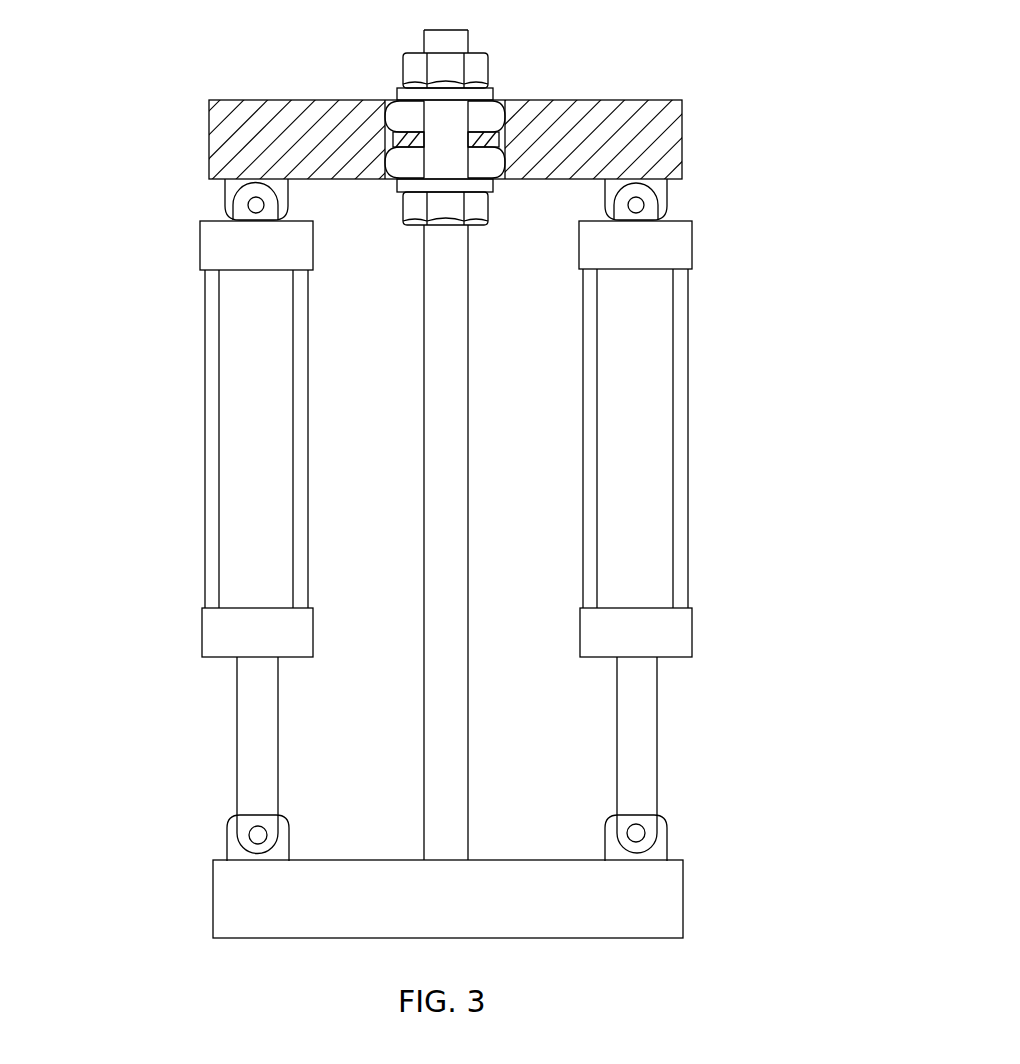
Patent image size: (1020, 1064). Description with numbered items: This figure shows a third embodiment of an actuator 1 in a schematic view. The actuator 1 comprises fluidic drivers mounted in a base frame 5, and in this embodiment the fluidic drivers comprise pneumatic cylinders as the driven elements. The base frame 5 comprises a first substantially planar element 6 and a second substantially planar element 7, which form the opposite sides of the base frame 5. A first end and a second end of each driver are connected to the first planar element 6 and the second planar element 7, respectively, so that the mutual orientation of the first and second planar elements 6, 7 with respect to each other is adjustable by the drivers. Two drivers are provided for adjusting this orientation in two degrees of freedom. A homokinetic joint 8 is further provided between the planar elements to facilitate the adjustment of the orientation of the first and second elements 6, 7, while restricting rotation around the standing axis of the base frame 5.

The actuator 1 is at (158, 373).
The base frame 5 is at (738, 863).
The first planar element 6 is at (637, 133).
The second planar element 7 is at (488, 903).
The homokinetic joint 8 is at (448, 142).